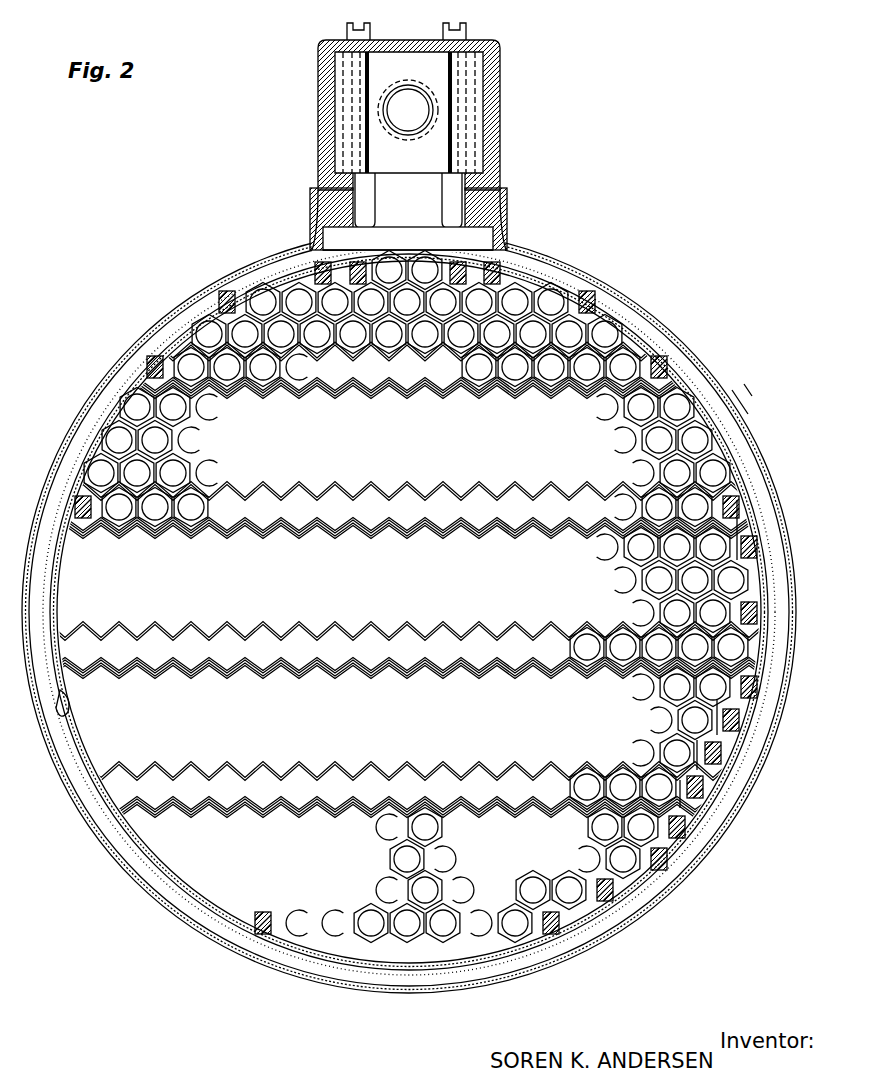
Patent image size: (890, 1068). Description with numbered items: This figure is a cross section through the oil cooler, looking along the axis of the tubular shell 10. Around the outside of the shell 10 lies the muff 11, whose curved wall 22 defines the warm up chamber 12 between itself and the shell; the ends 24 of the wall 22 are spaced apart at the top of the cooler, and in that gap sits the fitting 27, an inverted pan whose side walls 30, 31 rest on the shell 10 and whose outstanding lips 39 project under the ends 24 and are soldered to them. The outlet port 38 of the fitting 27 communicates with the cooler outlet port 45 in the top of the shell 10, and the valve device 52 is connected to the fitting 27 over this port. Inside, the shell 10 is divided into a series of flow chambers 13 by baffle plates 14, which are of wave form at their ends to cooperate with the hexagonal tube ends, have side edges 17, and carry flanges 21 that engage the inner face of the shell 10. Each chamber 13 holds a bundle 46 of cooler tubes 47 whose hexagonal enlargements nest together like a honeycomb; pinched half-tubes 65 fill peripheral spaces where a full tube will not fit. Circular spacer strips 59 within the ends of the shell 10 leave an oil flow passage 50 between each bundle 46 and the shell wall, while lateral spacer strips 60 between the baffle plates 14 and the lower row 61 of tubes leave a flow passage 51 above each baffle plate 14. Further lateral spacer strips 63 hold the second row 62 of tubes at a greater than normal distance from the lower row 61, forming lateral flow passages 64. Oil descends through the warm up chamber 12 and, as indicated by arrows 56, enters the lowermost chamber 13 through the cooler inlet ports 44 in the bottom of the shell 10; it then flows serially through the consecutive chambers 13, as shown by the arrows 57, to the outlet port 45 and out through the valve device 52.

The shell 10 is at (598, 285).
The muff 11 is at (630, 290).
The warm up chamber 12 is at (218, 283).
The flow chambers 13 is at (280, 322).
The baffle plates 14 is at (460, 398).
The side edges 17 is at (705, 395).
The flanges 21 is at (733, 410).
The wall 22 is at (700, 350).
The ends 24 is at (303, 232).
The fitting 27 is at (507, 200).
The side wall 30 is at (320, 240).
The side wall 31 is at (540, 250).
The outlet port 38 is at (450, 188).
The lip 39 is at (310, 243).
The cooler inlet ports 44 is at (388, 960).
The cooler outlet port 45 is at (508, 213).
The bundle 46 is at (600, 330).
The cooler tubes 47 is at (475, 905).
The oil flow passage 50 is at (500, 975).
The flow passage 51 is at (525, 392).
The valve device 52 is at (500, 62).
The arrows 56 is at (438, 945).
The arrows 57 is at (430, 250).
The circular spacer strips 59 is at (655, 335).
The lateral spacer strips 60 is at (345, 394).
The row of tubes 61 is at (190, 368).
The row of tubes 62 is at (130, 470).
The lateral spacer strips 63 is at (395, 352).
The lateral flow passages 64 is at (640, 470).
The half-tube 65 is at (587, 295).